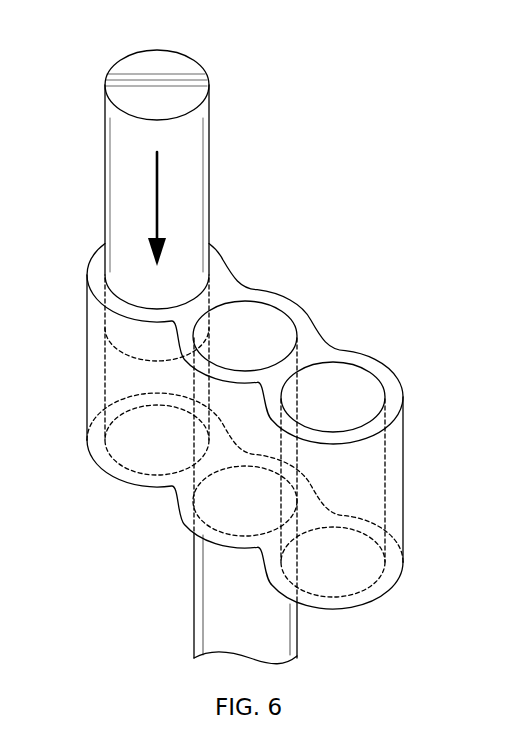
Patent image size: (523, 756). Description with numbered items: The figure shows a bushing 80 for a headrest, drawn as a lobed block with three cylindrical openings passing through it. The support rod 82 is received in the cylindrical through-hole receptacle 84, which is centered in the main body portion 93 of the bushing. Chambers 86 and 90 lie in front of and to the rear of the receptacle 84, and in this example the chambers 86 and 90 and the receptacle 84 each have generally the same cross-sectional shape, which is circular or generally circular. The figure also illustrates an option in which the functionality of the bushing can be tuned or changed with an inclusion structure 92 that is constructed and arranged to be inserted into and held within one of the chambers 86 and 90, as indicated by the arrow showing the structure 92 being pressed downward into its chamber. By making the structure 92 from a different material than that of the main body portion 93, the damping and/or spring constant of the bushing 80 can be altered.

The bushing 80 is at (300, 322).
The support rod 82 is at (207, 635).
The cylindrical through-hole receptacle 84 is at (242, 312).
The chamber 86 is at (348, 377).
The chamber 90 is at (140, 475).
The inclusion structure 92 is at (185, 70).
The main body portion 93 is at (76, 356).